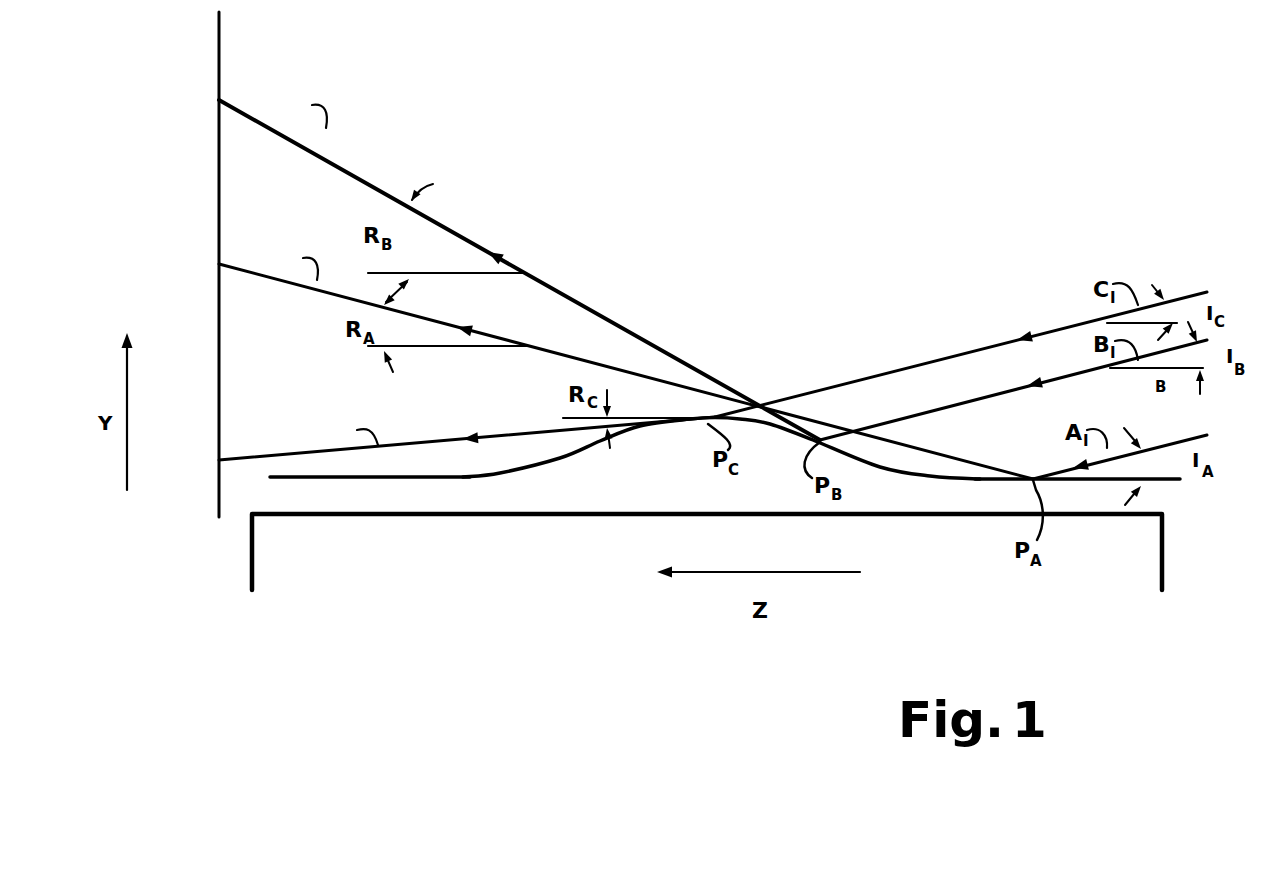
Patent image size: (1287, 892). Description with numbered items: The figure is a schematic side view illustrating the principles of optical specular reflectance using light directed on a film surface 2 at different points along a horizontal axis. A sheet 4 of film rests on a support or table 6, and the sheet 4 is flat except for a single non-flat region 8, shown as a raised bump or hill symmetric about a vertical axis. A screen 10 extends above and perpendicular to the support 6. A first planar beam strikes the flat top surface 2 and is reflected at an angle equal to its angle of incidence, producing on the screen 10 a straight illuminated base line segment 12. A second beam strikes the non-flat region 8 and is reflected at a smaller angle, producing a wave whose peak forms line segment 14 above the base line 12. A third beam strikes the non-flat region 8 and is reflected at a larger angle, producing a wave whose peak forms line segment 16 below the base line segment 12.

The film surface 2 is at (462, 477).
The sheet of film 4 is at (1155, 479).
The support or table 6 is at (1162, 553).
The non-flat region 8 is at (760, 422).
The screen 10 is at (219, 178).
The base line segment 12 is at (219, 264).
The line segment with wave peak 14 is at (219, 100).
The line segment with wave peak 16 is at (219, 460).